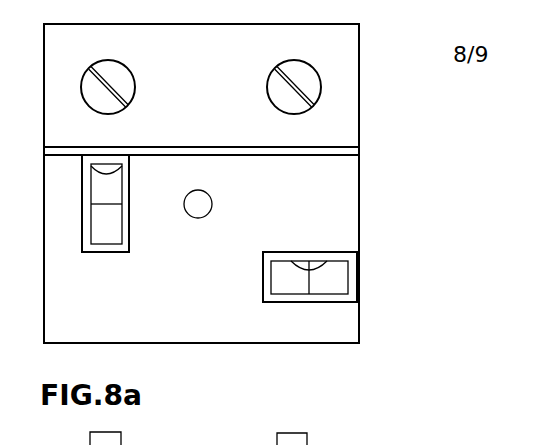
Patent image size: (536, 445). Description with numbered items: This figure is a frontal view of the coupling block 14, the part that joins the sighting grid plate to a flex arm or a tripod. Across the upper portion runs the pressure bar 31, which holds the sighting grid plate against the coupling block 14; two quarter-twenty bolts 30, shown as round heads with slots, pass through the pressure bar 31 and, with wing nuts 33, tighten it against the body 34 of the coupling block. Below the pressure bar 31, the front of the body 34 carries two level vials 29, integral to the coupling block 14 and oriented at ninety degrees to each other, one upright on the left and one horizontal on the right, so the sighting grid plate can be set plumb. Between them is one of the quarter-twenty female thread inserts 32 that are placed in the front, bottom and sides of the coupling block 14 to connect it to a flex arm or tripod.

The coupling block 14 is at (370, 210).
The level vials 29 is at (98, 257).
The bolts 30 is at (328, 87).
The pressure bar 31 is at (332, 125).
The female thread inserts 32 is at (218, 199).
The wing nuts 33 is at (535, 104).
The body 34 is at (315, 324).